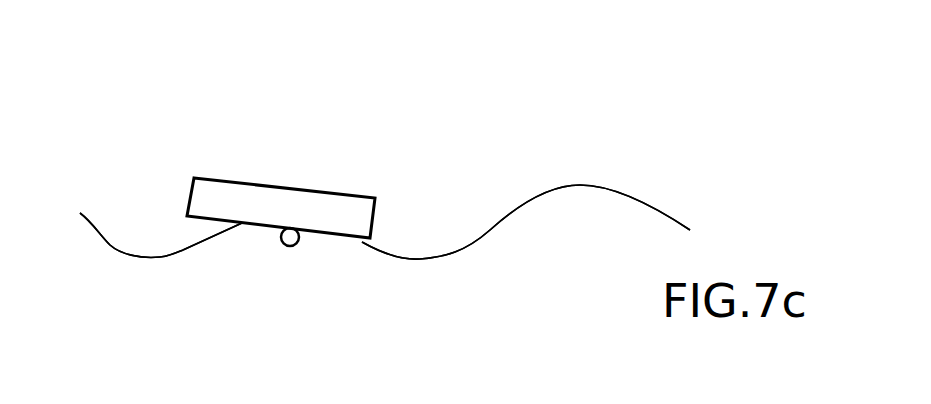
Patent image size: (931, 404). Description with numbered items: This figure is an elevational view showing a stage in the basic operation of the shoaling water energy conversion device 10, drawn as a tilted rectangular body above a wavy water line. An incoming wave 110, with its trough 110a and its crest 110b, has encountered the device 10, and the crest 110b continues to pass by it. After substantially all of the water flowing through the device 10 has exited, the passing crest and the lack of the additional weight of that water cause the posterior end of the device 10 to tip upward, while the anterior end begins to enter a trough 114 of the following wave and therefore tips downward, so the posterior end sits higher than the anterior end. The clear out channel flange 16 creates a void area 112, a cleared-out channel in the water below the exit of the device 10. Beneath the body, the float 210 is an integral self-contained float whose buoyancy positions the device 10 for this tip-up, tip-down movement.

The shoaling water energy conversion device 10 is at (297, 206).
The clear out channel flange 16 is at (212, 239).
The incoming wave 110 is at (189, 285).
The trough 110a is at (148, 258).
The crest 110b is at (262, 228).
The void area 112 is at (147, 198).
The trough of the following wave 114 is at (495, 228).
The float 210 is at (302, 239).